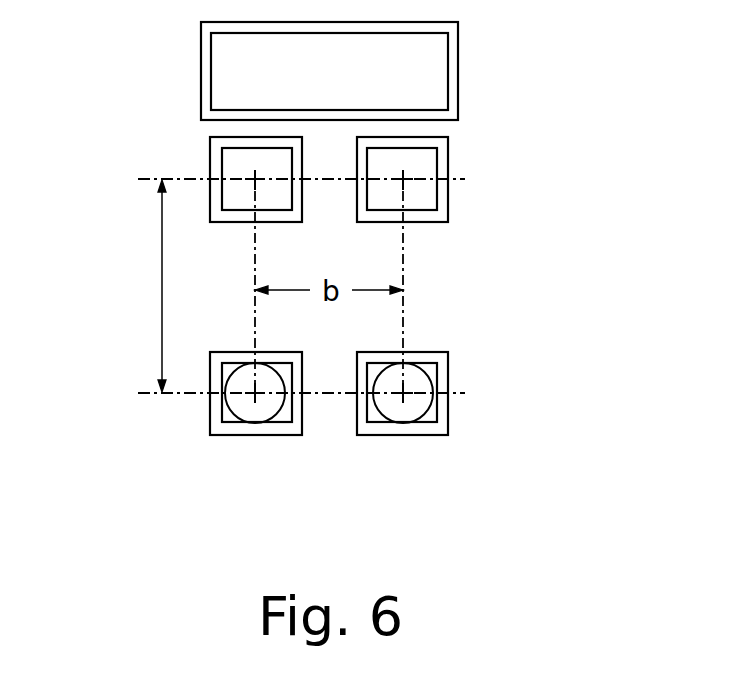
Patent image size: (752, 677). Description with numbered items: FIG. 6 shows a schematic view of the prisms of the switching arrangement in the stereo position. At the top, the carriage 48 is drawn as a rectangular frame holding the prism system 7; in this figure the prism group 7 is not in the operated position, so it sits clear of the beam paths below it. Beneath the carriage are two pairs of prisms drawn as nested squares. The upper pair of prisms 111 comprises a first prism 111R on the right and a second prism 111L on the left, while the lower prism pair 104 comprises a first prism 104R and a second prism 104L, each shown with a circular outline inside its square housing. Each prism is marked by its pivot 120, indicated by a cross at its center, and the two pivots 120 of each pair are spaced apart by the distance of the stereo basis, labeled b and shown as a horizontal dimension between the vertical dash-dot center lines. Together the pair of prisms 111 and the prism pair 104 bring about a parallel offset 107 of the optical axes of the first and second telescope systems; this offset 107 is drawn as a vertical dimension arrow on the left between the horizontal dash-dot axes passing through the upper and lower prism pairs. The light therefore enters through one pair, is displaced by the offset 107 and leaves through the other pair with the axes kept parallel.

The carriage 48 is at (455, 37).
The prism system 7 is at (432, 78).
The second prism 111L is at (222, 172).
The first prism 111R is at (437, 182).
The pair of prisms 111 is at (446, 244).
The prism pair 104 is at (466, 362).
The second prism 104L is at (257, 420).
The first prism 104R is at (405, 423).
The pivots 120 is at (255, 179).
The parallel offset 107 is at (161, 285).